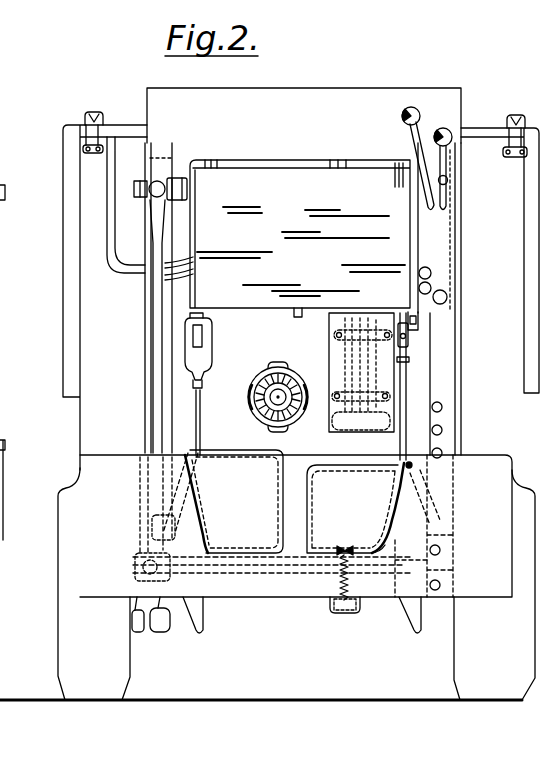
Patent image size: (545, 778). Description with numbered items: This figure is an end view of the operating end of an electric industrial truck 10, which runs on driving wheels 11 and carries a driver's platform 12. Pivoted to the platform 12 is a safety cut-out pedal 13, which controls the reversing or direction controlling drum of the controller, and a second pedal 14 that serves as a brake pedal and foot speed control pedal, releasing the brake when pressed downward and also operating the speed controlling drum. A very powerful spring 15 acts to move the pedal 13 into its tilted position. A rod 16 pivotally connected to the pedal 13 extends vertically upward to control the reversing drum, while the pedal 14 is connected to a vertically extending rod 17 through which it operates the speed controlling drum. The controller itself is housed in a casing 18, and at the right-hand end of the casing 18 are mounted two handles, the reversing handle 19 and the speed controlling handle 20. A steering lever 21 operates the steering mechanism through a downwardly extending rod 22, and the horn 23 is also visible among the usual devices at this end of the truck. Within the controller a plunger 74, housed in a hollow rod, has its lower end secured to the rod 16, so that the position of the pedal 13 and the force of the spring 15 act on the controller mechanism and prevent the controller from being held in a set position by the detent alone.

The electric industrial truck 10 is at (100, 333).
The driving wheels 11 is at (118, 670).
The driver's platform 12 is at (250, 583).
The safety cut-out pedal 13 is at (372, 470).
The brake pedal and foot speed control pedal 14 is at (233, 450).
The spring 15 is at (342, 606).
The rod 16 is at (410, 380).
The rod 17 is at (199, 405).
The casing 18 is at (272, 276).
The reversing handle 19 is at (404, 108).
The speed controlling handle 20 is at (447, 130).
The steering lever 21 is at (133, 190).
The rod 22 is at (175, 307).
The horn 23 is at (271, 372).
The plunger 74 is at (410, 322).